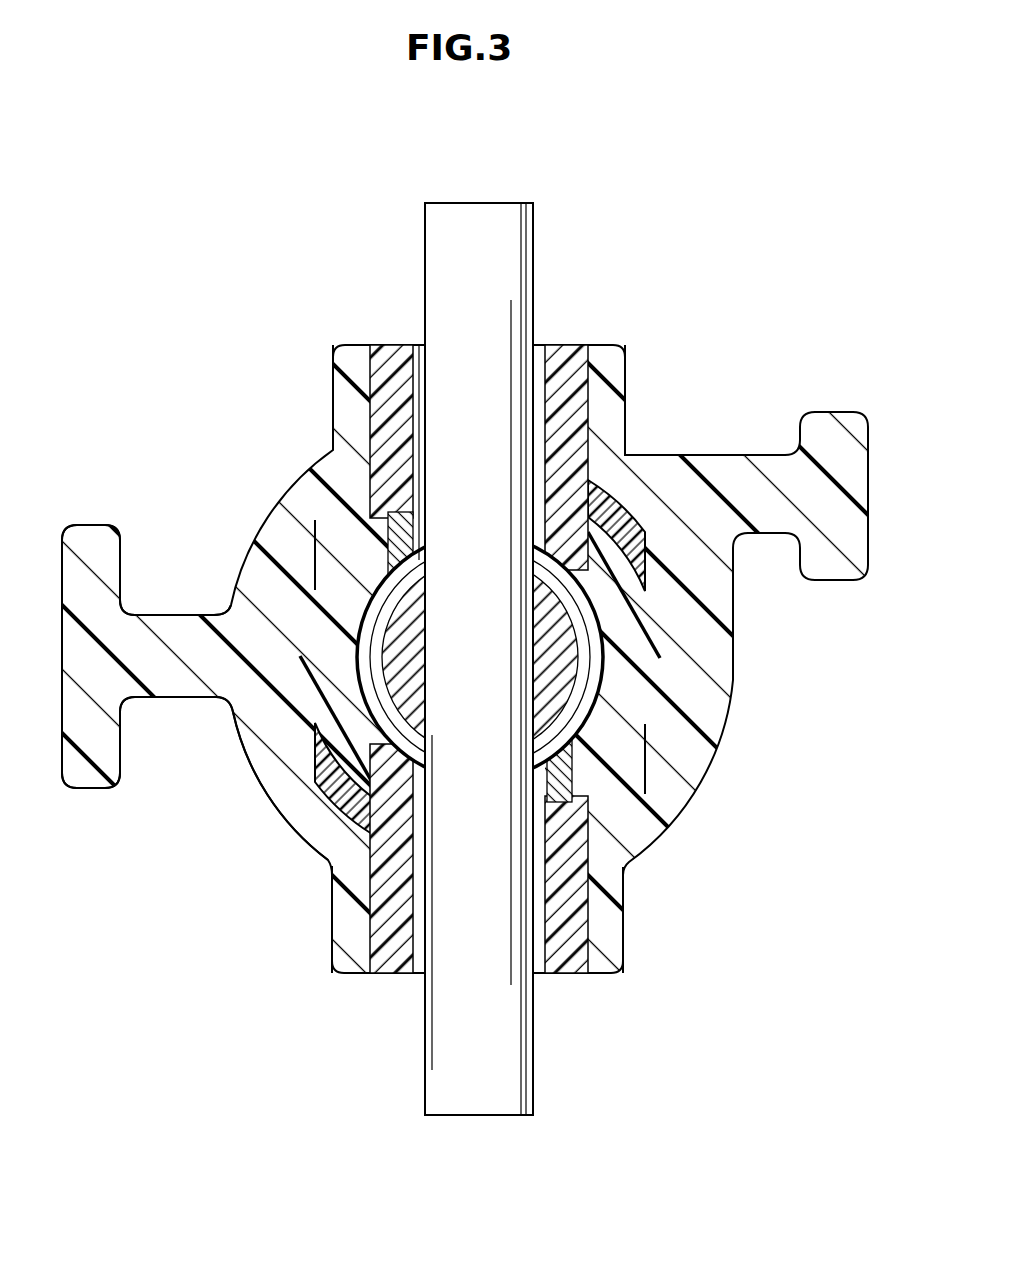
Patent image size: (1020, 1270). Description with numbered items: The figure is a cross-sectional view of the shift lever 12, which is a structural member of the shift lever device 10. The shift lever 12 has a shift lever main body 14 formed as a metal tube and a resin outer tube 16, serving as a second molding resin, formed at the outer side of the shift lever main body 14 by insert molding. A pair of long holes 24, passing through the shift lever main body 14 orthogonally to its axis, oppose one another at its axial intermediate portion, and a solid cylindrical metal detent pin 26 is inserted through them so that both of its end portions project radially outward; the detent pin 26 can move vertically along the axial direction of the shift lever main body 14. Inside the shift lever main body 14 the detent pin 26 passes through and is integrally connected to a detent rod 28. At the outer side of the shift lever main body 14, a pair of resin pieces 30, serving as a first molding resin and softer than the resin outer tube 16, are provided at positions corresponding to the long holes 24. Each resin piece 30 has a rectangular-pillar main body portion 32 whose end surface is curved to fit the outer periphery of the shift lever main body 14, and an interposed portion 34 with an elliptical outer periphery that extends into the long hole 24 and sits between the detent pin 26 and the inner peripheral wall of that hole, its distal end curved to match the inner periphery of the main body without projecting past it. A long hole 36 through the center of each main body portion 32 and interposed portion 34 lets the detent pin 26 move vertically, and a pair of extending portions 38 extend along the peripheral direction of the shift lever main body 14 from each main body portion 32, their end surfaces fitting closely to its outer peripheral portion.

The shift lever device 10 is at (482, 659).
The shift lever 12 is at (755, 745).
The shift lever main body 14 is at (330, 697).
The resin outer tube 16 is at (252, 567).
The long holes 24 is at (580, 482).
The detent pin 26 is at (520, 228).
The detent rod 28 is at (565, 668).
The resin pieces 30 is at (356, 411).
The main body portions 32 is at (568, 353).
The interposed portions 34 is at (405, 531).
The long hole 36 is at (418, 397).
The extending portions 38 is at (343, 517).